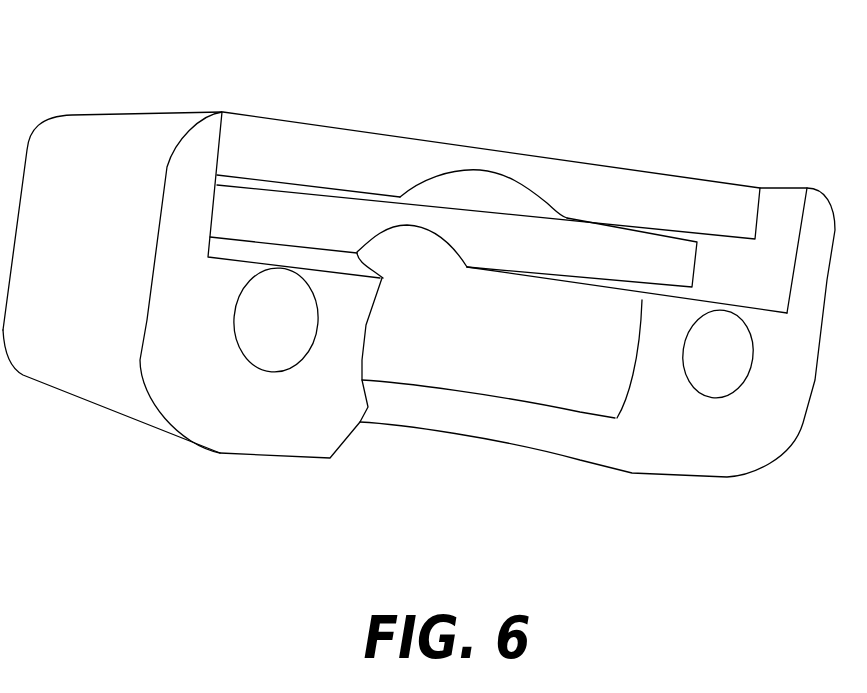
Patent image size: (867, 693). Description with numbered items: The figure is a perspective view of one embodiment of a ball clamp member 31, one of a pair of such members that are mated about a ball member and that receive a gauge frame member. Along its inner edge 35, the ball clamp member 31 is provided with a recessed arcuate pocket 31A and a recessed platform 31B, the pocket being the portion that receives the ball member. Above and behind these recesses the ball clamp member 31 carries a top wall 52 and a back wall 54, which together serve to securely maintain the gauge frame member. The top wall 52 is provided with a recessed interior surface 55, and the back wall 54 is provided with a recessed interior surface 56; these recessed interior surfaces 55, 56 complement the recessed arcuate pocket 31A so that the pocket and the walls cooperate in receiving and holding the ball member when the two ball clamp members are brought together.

The ball clamp member 31 is at (755, 437).
The recessed arcuate pocket 31A is at (567, 305).
The recessed platform 31B is at (284, 256).
The inner edge 35 is at (184, 395).
The top wall 52 is at (608, 187).
The back wall 54 is at (522, 233).
The recessed interior surface of top wall 55 is at (412, 254).
The recessed interior surface of back wall 56 is at (484, 186).